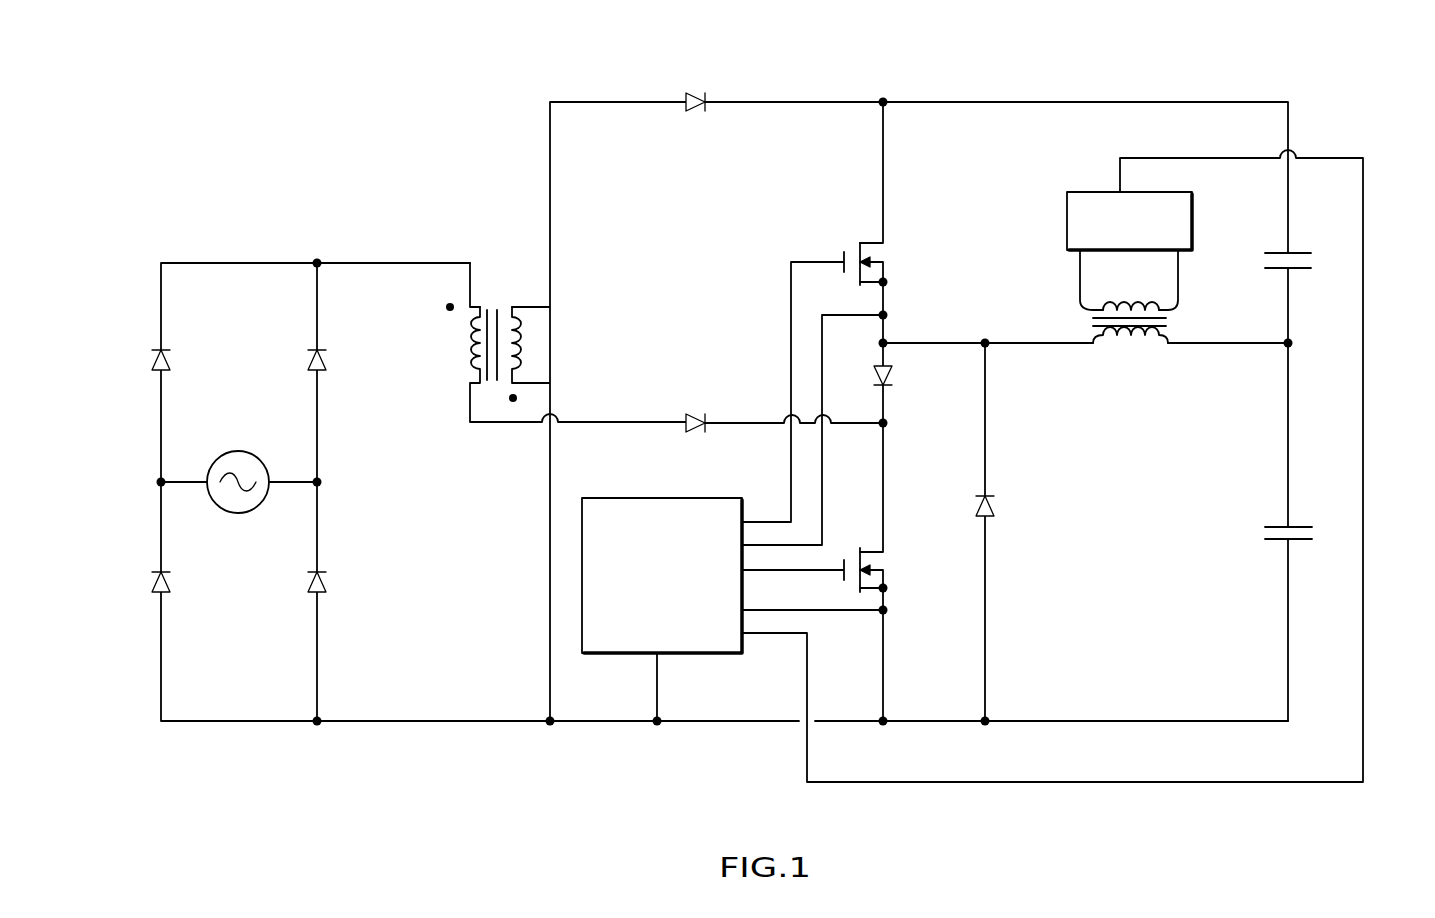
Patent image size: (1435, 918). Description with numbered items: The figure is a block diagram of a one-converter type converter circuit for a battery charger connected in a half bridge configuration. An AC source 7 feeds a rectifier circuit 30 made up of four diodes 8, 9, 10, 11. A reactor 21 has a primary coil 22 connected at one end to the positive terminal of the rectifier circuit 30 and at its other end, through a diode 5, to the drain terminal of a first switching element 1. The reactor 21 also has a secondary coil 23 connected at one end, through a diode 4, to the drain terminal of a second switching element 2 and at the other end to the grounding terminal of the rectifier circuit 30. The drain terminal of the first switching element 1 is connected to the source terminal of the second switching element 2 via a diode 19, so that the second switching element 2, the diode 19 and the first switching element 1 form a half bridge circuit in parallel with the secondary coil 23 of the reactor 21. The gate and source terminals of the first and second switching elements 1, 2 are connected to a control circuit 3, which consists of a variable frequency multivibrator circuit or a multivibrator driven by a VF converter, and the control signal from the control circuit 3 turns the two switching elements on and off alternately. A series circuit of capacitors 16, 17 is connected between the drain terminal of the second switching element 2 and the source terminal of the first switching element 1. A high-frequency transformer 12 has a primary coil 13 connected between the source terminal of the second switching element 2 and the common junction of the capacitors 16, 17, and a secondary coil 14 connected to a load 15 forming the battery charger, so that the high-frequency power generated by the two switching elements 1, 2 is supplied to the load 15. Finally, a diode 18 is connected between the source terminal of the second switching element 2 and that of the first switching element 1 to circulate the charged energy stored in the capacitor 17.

The first switching element 1 is at (890, 572).
The second switching element 2 is at (885, 268).
The control circuit 3 is at (665, 497).
The diode 4 is at (696, 108).
The diode 5 is at (688, 418).
The AC power source 7 is at (234, 451).
The diode 8 is at (152, 360).
The diode 9 is at (152, 582).
The diode 10 is at (310, 352).
The diode 11 is at (319, 578).
The high-frequency transformer 12 is at (1175, 348).
The primary coil 13 is at (1120, 350).
The secondary coil 14 is at (1122, 297).
The load 15 is at (1197, 222).
The capacitor 16 is at (1298, 270).
The capacitor 17 is at (1298, 520).
The diode 18 is at (988, 518).
The diode 19 is at (888, 390).
The reactor 21 is at (499, 280).
The primary coil 22 is at (470, 350).
The secondary coil 23 is at (519, 352).
The rectifier circuit 30 is at (246, 705).